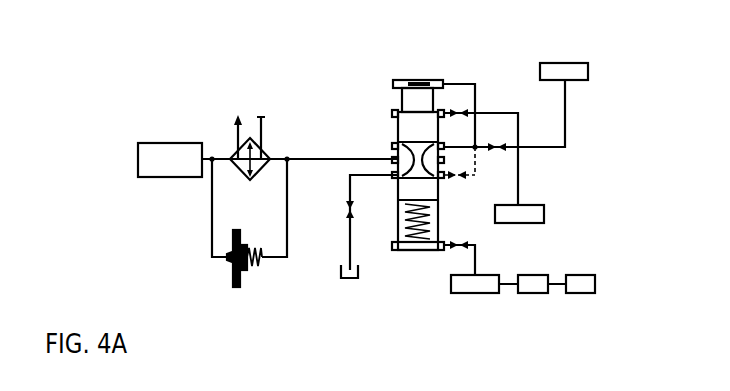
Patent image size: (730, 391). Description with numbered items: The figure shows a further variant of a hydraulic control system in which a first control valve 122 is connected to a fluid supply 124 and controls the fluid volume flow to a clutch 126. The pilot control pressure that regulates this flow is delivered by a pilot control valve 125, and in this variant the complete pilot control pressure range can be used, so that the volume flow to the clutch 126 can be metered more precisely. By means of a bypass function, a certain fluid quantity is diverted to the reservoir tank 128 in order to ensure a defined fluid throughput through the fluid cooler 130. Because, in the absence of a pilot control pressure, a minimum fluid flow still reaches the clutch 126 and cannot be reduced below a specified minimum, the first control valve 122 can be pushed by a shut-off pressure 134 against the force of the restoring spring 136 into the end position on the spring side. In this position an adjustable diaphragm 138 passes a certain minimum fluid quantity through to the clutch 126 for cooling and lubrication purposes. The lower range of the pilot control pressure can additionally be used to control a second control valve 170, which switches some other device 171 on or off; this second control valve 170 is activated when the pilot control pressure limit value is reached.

The first control valve 122 is at (391, 79).
The fluid supply 124 is at (165, 156).
The pilot control valve 125 is at (488, 295).
The clutch 126 is at (550, 72).
The reservoir tank 128 is at (341, 268).
The fluid cooler 130 is at (237, 157).
The shut-off pressure 134 is at (532, 210).
The restoring spring 136 is at (410, 240).
The adjustable diaphragm 138 is at (450, 177).
The second control valve 170 is at (533, 275).
The other device 171 is at (582, 275).